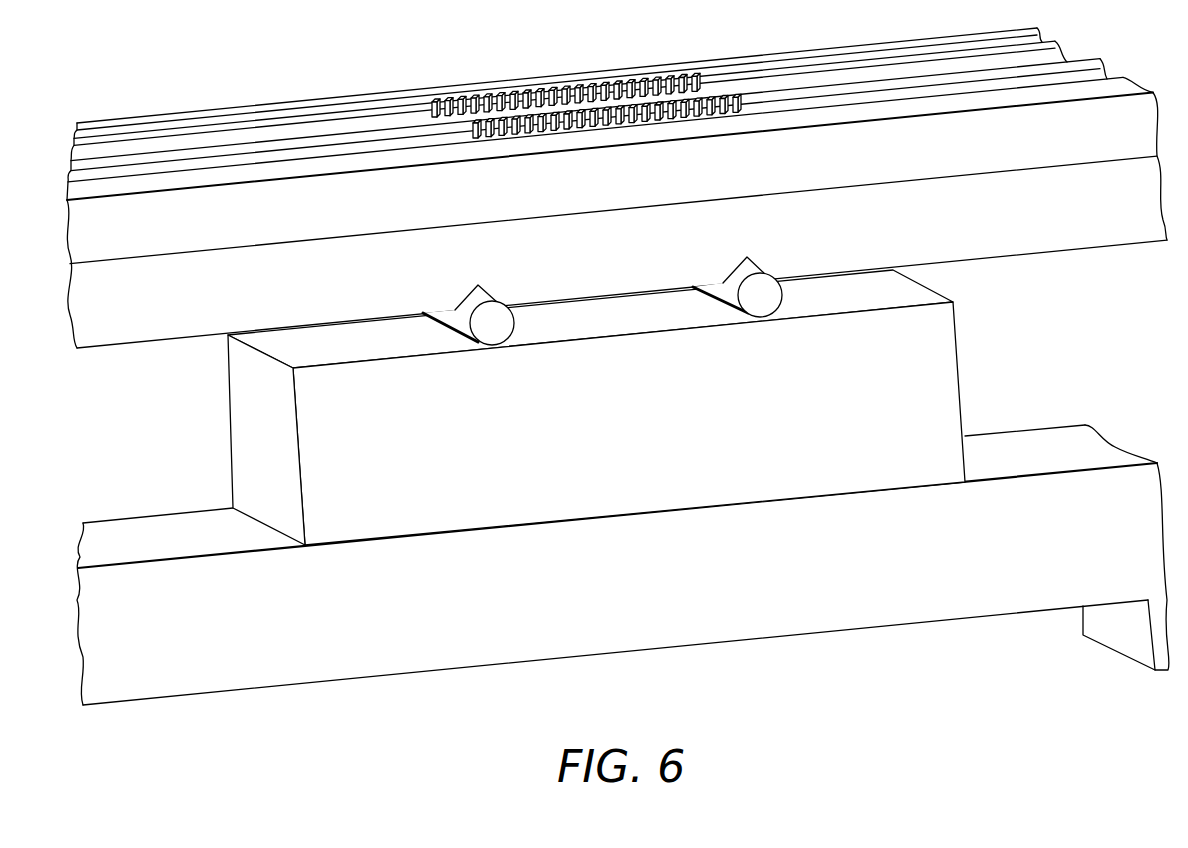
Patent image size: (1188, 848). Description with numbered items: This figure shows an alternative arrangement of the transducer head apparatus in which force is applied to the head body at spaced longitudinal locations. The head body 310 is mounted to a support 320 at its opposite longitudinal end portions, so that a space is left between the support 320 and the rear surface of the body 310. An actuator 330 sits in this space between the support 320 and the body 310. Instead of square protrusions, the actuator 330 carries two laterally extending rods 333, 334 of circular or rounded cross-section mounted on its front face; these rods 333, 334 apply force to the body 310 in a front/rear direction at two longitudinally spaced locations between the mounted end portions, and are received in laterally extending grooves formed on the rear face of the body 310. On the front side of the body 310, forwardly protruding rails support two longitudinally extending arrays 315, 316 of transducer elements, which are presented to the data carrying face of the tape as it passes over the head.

The head body 310 is at (968, 151).
The array of transducer elements 315 is at (514, 86).
The array of transducer elements 316 is at (615, 128).
The support 320 is at (342, 662).
The actuator 330 is at (618, 503).
The rod 333 is at (502, 330).
The rod 334 is at (770, 303).